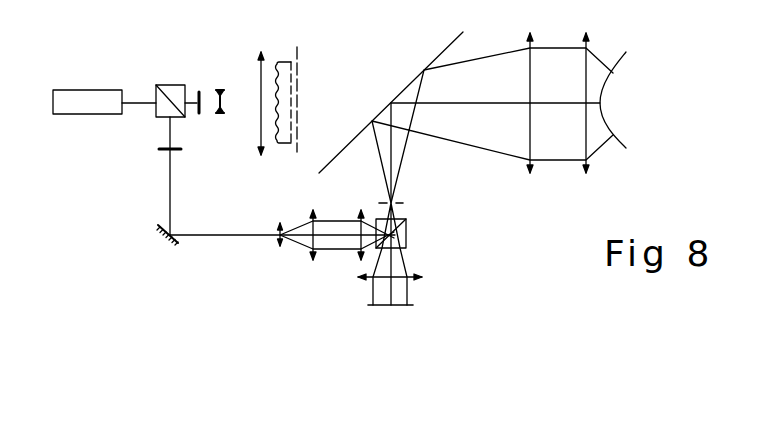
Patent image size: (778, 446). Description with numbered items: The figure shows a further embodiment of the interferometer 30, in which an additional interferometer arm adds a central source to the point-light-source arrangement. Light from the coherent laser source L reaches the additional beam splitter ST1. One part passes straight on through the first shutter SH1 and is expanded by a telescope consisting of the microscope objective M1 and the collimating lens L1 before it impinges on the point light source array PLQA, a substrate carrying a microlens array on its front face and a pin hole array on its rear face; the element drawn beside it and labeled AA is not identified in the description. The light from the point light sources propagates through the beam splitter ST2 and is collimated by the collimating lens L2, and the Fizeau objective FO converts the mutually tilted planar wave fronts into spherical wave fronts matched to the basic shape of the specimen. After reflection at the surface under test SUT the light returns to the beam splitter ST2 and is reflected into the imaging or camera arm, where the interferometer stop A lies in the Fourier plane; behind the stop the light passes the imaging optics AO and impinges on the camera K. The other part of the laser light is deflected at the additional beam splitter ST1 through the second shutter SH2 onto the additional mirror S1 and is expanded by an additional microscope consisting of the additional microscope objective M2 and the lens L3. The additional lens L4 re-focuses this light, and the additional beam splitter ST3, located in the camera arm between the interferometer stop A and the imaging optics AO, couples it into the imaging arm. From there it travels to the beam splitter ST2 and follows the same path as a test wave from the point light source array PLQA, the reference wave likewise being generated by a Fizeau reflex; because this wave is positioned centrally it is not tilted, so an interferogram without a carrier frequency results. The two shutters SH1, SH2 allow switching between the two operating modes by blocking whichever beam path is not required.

The coherent laser source L is at (87, 93).
The additional beam splitter ST1 is at (170, 92).
The microscope objective M1 is at (222, 90).
The first shutter SH1 is at (199, 114).
The second shutter SH2 is at (154, 148).
The point light source array PLQA is at (279, 87).
The collimating lens L1 is at (252, 108).
The output aperture AA is at (301, 106).
The additional mirror S1 is at (159, 237).
The additional microscope objective M2 is at (285, 219).
The lens L3 is at (315, 226).
The additional lens L4 is at (360, 226).
The interferometer stop A is at (406, 200).
The additional beam splitter ST3 is at (413, 233).
The imaging optics AO is at (402, 272).
The camera K is at (402, 300).
The beam splitter ST2 is at (400, 94).
The collimating lens L2 is at (528, 94).
The Fizeau objective FO is at (585, 94).
The surface under test SUT is at (633, 81).
The interferometer 30 is at (192, 322).